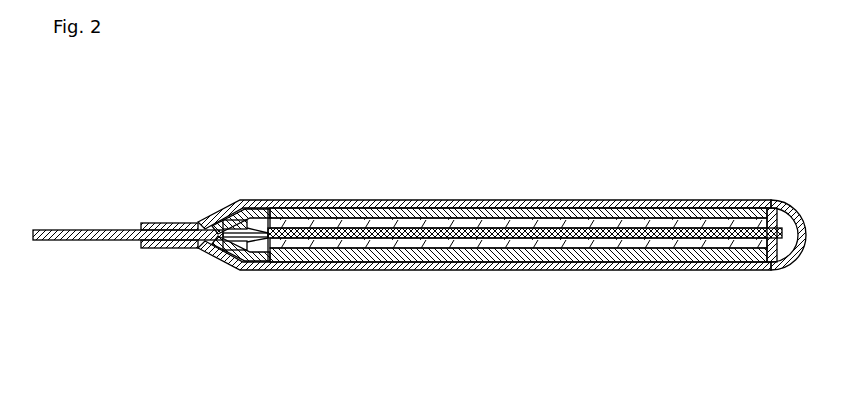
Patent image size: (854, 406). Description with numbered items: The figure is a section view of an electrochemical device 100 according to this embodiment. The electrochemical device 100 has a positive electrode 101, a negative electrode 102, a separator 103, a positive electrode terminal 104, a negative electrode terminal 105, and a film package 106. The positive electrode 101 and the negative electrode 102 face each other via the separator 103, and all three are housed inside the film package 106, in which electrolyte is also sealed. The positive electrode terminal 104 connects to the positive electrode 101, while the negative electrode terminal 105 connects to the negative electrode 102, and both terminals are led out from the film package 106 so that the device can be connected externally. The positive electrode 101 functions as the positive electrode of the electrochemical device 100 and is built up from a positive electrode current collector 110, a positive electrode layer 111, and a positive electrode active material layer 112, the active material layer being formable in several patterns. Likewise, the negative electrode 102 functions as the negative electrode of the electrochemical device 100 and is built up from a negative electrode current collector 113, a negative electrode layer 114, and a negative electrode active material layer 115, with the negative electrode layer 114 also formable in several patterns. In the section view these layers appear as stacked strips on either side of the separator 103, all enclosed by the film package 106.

The electrochemical device 100 is at (643, 77).
The positive electrode 101 is at (807, 146).
The negative electrode 102 is at (807, 325).
The separator 103 is at (571, 200).
The positive electrode terminal 104 is at (95, 231).
The negative electrode terminal 105 is at (169, 235).
The film package 106 is at (500, 270).
The positive electrode current collector 110 is at (699, 200).
The positive electrode layer 111 is at (745, 200).
The positive electrode active material layer 112 is at (786, 200).
The negative electrode current collector 113 is at (704, 270).
The negative electrode layer 114 is at (745, 270).
The negative electrode active material layer 115 is at (788, 270).